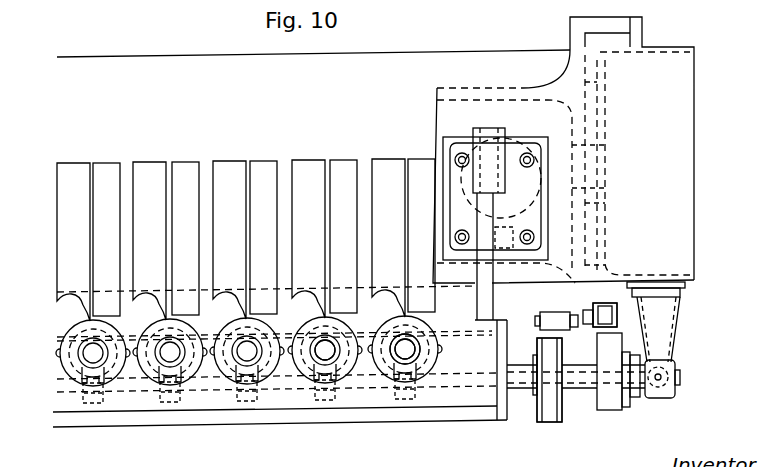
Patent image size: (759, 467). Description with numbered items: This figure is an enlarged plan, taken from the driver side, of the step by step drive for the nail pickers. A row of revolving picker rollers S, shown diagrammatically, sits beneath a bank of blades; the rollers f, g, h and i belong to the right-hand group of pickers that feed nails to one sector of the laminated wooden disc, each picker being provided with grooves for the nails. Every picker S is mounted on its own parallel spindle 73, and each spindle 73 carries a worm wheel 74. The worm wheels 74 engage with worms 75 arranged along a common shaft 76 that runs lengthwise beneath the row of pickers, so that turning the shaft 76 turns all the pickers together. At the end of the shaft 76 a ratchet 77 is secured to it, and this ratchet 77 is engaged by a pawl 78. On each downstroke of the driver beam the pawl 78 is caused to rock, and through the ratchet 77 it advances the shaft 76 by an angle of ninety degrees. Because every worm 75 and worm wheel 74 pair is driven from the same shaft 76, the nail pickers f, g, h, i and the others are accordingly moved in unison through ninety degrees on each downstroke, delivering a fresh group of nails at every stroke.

The revolving picker roller f is at (85, 388).
The revolving picker roller g is at (185, 367).
The revolving picker roller h is at (263, 372).
The revolving picker roller i is at (313, 363).
The revolving picker roller S is at (428, 335).
The parallel spindle 73 is at (333, 353).
The worm wheel 74 is at (425, 341).
The worm 75 is at (405, 352).
The shaft 76 is at (470, 380).
The ratchet 77 is at (612, 408).
The pawl 78 is at (607, 306).